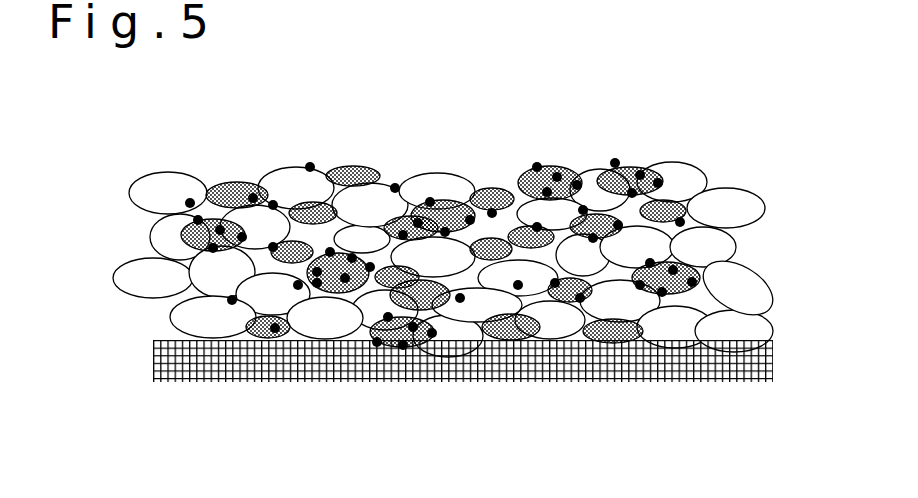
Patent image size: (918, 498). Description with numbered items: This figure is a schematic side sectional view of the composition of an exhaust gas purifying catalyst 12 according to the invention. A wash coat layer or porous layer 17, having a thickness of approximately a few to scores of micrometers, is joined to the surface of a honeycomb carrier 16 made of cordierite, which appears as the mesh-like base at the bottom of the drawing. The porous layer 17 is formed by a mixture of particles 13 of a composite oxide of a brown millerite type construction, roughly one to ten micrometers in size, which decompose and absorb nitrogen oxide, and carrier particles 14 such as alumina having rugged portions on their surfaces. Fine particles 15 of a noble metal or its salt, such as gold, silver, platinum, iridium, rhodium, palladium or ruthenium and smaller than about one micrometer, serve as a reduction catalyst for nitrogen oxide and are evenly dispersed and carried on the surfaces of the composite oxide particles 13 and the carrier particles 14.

The exhaust gas purifying catalyst 12 is at (155, 163).
The particles of composite oxide of brown millerite type construction 13 is at (240, 182).
The carrier particles 14 is at (453, 185).
The particles of noble metal 15 is at (395, 186).
The honeycomb carrier 16 is at (330, 364).
The porous layer 17 is at (112, 332).